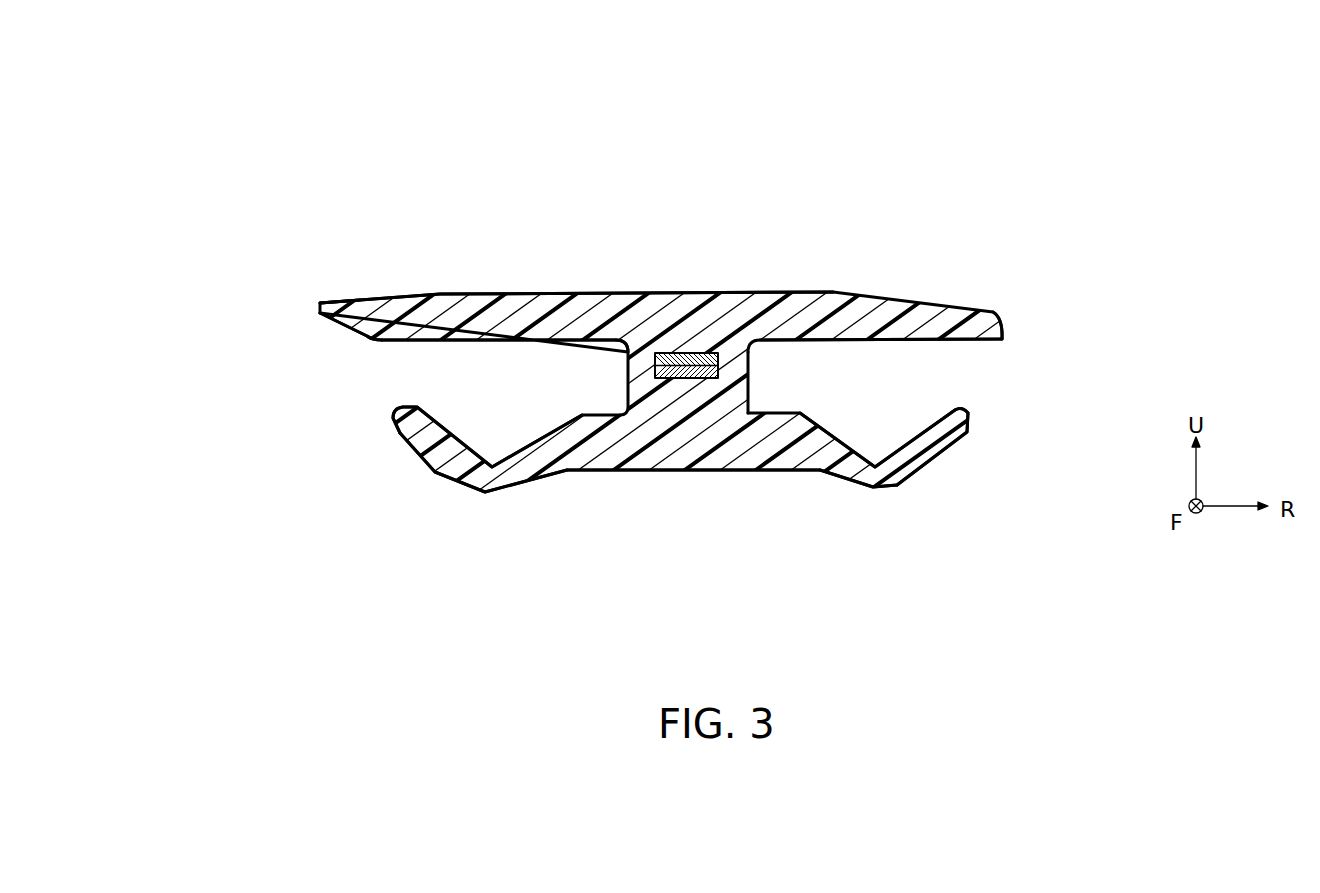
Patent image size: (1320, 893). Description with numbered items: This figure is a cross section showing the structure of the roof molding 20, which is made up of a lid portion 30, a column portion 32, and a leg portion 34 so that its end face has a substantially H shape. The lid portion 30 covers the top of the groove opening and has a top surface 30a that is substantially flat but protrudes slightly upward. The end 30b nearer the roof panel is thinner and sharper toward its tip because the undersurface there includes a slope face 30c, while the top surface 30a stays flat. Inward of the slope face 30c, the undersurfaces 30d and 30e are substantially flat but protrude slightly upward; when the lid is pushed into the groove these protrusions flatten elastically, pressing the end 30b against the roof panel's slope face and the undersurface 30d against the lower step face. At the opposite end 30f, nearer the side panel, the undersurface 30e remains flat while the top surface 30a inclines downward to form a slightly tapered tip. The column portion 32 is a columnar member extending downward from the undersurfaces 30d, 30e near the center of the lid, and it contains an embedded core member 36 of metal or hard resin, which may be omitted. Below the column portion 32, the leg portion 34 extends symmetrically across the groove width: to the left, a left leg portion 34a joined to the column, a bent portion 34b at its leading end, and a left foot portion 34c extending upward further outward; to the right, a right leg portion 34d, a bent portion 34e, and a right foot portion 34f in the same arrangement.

The roof molding 20 is at (876, 173).
The lid portion 30 is at (730, 288).
The top surface 30a is at (592, 288).
The end 30b is at (318, 305).
The slope face 30c is at (364, 324).
The undersurface 30d is at (440, 339).
The undersurface 30e is at (950, 340).
The end 30f is at (995, 315).
The column portion 32 is at (751, 378).
The leg portion 34 is at (720, 472).
The left leg portion 34a is at (557, 473).
The bent portion 34b is at (492, 466).
The left foot portion 34c is at (402, 437).
The right leg portion 34d is at (810, 472).
The bent portion 34e is at (873, 465).
The right foot portion 34f is at (962, 448).
The core member 36 is at (720, 353).